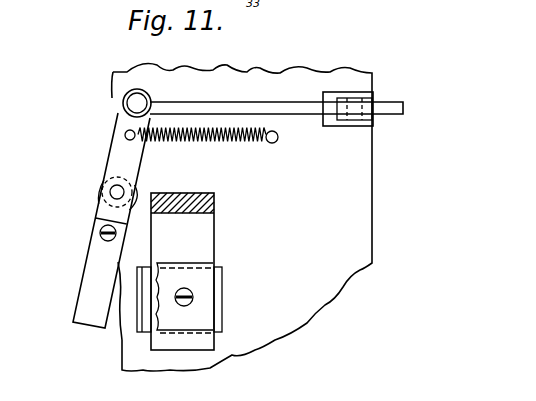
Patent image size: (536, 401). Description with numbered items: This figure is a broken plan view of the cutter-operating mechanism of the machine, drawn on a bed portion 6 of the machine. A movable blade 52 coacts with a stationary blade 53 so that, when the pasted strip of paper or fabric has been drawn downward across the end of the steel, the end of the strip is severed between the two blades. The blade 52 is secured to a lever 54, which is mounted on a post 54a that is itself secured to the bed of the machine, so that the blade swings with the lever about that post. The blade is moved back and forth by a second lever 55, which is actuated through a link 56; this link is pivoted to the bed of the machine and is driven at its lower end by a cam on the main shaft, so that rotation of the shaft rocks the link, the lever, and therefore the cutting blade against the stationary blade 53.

The plate 6 is at (242, 217).
The blade 52 is at (88, 266).
The stationary blade 53 is at (147, 272).
The lever 54 is at (139, 168).
The post 54a is at (102, 192).
The lever 55 is at (254, 109).
The link 56 is at (376, 101).